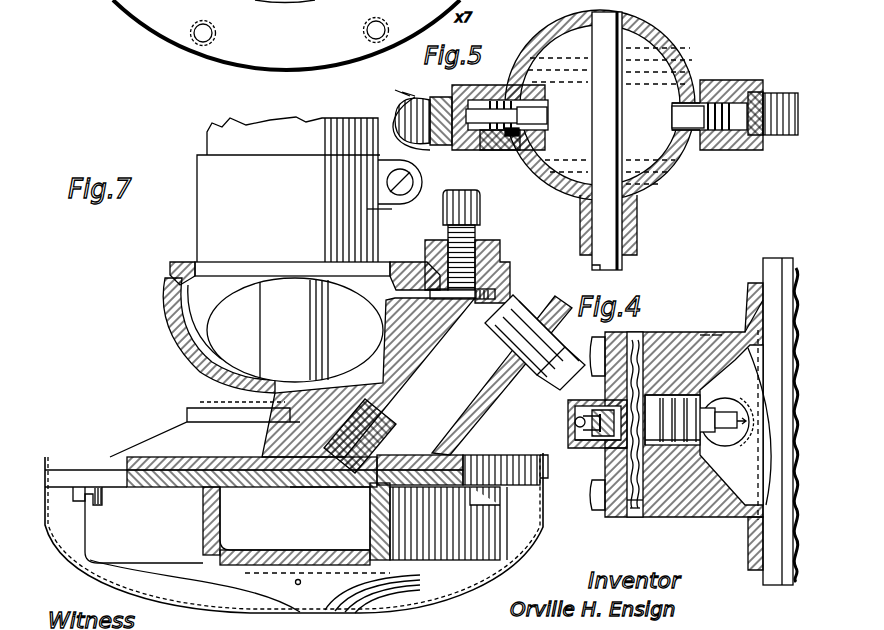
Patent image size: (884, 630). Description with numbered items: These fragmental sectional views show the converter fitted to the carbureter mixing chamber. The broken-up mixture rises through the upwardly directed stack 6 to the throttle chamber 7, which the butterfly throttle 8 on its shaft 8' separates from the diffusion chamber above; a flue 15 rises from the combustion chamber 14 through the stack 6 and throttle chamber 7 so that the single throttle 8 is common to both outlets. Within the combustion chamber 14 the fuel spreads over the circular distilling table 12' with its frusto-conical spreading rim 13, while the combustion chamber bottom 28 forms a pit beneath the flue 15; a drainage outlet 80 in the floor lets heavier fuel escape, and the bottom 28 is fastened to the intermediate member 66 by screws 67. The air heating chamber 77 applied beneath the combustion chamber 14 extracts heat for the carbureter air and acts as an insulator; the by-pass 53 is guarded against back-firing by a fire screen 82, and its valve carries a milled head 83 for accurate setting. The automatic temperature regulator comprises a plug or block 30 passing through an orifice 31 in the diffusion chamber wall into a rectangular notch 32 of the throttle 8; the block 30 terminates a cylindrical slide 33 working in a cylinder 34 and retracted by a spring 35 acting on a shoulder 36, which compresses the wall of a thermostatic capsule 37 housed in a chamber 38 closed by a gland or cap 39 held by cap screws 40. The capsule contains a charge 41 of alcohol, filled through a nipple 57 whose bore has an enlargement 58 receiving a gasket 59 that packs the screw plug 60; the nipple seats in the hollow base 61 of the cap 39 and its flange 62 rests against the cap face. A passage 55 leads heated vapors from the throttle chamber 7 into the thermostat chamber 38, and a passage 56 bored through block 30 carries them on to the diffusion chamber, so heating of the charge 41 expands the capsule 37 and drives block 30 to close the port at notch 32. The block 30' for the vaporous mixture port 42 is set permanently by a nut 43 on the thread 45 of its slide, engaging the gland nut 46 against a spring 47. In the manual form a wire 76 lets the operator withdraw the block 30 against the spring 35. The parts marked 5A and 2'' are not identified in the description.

In FIG. 7, the stack 6 is at (210, 133).
In FIG. 4, the throttle chamber 7 is at (748, 356).
In FIG. 5, the throttle 8 is at (607, 141).
In FIG. 4, the throttle 8 is at (749, 426).
In FIG. 4, the throttle shaft 8' is at (780, 421).
In FIG. 7, the distilling table 12' is at (295, 515).
In FIG. 7, the spreading rim 13 is at (310, 463).
In FIG. 7, the combustion chamber 14 is at (115, 2).
In FIG. 7, the flue 15 is at (295, 330).
In FIG. 4, the flue 15 is at (727, 435).
In FIG. 7, the combustion chamber bottom 28 is at (362, 590).
In FIG. 5, the plug or block 30 is at (512, 129).
In FIG. 4, the plug or block 30 is at (726, 429).
In FIG. 5, the block for vaporous mixture port 30' is at (670, 109).
In FIG. 5, the orifice 31 is at (544, 72).
In FIG. 5, the notch 32 is at (548, 121).
In FIG. 4, the notch 32 is at (722, 420).
In FIG. 5, the cylindrical slide 33 is at (470, 149).
In FIG. 4, the cylindrical slide 33 is at (655, 448).
In FIG. 5, the cylinder 34 is at (510, 150).
In FIG. 4, the cylinder 34 is at (690, 448).
In FIG. 5, the spring 35 is at (497, 100).
In FIG. 4, the spring 35 is at (688, 395).
In FIG. 5, the shoulder 36 is at (500, 150).
In FIG. 4, the shoulder 36 is at (672, 447).
In FIG. 4, the thermostatic capsule 37 is at (628, 517).
In FIG. 4, the thermostat chamber 38 is at (636, 500).
In FIG. 4, the gland 39 is at (615, 458).
In FIG. 4, the cap screws 40 is at (592, 370).
In FIG. 4, the charge 41 is at (627, 385).
In FIG. 5, the vaporous mixture port 42 is at (676, 130).
In FIG. 5, the adjusting nut 43 is at (783, 136).
In FIG. 5, the thread 45 is at (782, 93).
In FIG. 5, the gland nut 46 is at (756, 146).
In FIG. 5, the spring 47 is at (720, 103).
In FIG. 7, the by-pass 53 is at (508, 375).
In FIG. 4, the passage 55 is at (702, 335).
In FIG. 4, the passage 56 is at (715, 335).
In FIG. 4, the nipple 57 is at (600, 398).
In FIG. 4, the enlargement 58 is at (575, 405).
In FIG. 4, the gasket 59 is at (600, 421).
In FIG. 4, the screw plug 60 is at (600, 432).
In FIG. 4, the hollow base 61 is at (575, 422).
In FIG. 4, the flange 62 is at (600, 448).
In FIG. 7, the intermediate member 66 is at (295, 428).
In FIG. 7, the screws 67 is at (213, 33).
In FIG. 5, the wire 76 is at (412, 97).
In FIG. 7, the air heating chamber 77 is at (150, 612).
In FIG. 7, the drainage outlet 80 is at (295, 583).
In FIG. 7, the fire screen 82 is at (386, 427).
In FIG. 7, the milled head 83 is at (480, 212).
In FIG. 7, the plate 5A is at (430, 297).
In FIG. 4, the casing 2'' is at (684, 426).